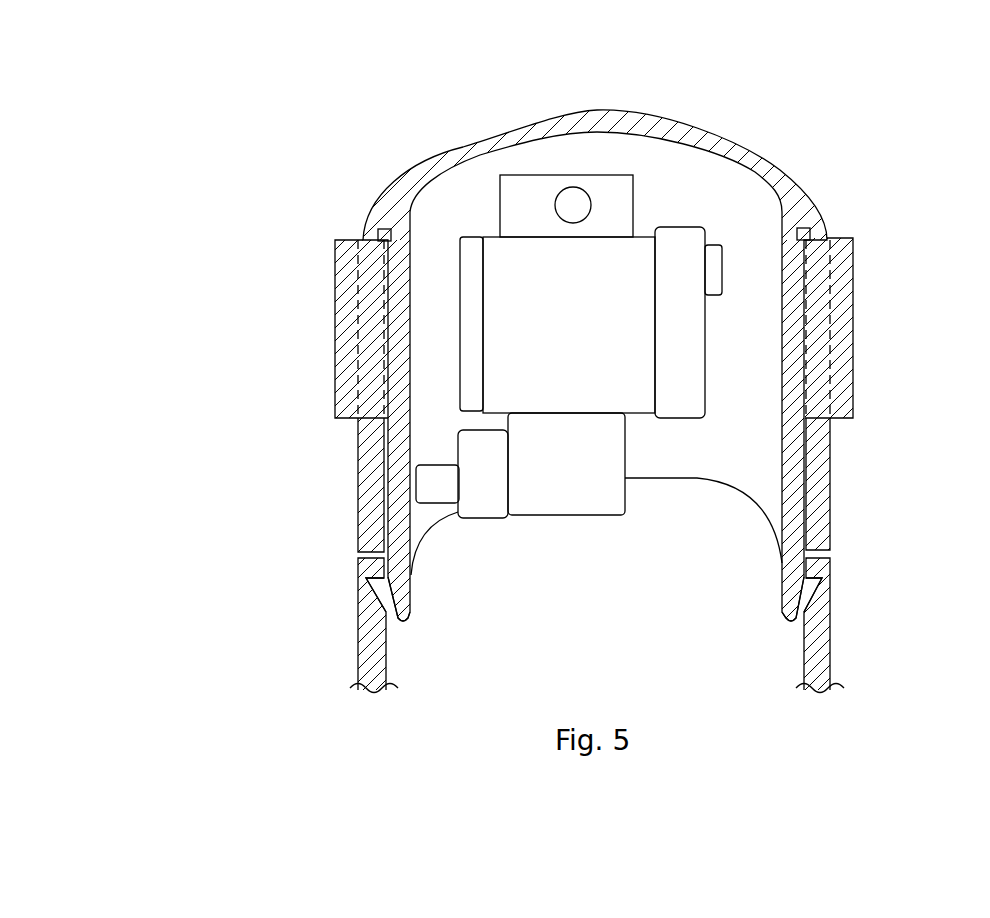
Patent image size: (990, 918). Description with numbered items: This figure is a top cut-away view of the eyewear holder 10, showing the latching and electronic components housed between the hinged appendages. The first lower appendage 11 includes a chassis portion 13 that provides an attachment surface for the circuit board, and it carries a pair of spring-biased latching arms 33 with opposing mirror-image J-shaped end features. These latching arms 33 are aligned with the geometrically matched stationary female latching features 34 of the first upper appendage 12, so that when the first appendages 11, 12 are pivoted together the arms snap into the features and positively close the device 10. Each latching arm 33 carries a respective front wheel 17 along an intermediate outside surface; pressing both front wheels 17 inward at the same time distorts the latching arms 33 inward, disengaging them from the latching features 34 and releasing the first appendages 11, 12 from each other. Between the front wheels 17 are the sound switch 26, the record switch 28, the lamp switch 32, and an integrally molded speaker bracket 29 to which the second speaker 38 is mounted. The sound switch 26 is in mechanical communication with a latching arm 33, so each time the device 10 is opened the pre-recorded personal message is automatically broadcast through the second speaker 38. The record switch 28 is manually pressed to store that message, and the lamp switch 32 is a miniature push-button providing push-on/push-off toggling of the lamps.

The eyewear holder 10 is at (158, 107).
The first lower appendage 11 is at (811, 189).
The first upper appendage 12 is at (352, 666).
The chassis portion 13 is at (757, 507).
The front wheels 17 is at (338, 313).
The sound switch 26 is at (445, 487).
The record switch 28 is at (713, 255).
The speaker bracket 29 is at (555, 268).
The lamp switch 32 is at (585, 195).
The latching arms 33 is at (392, 602).
The latching features 34 is at (375, 612).
The second speaker 38 is at (470, 245).